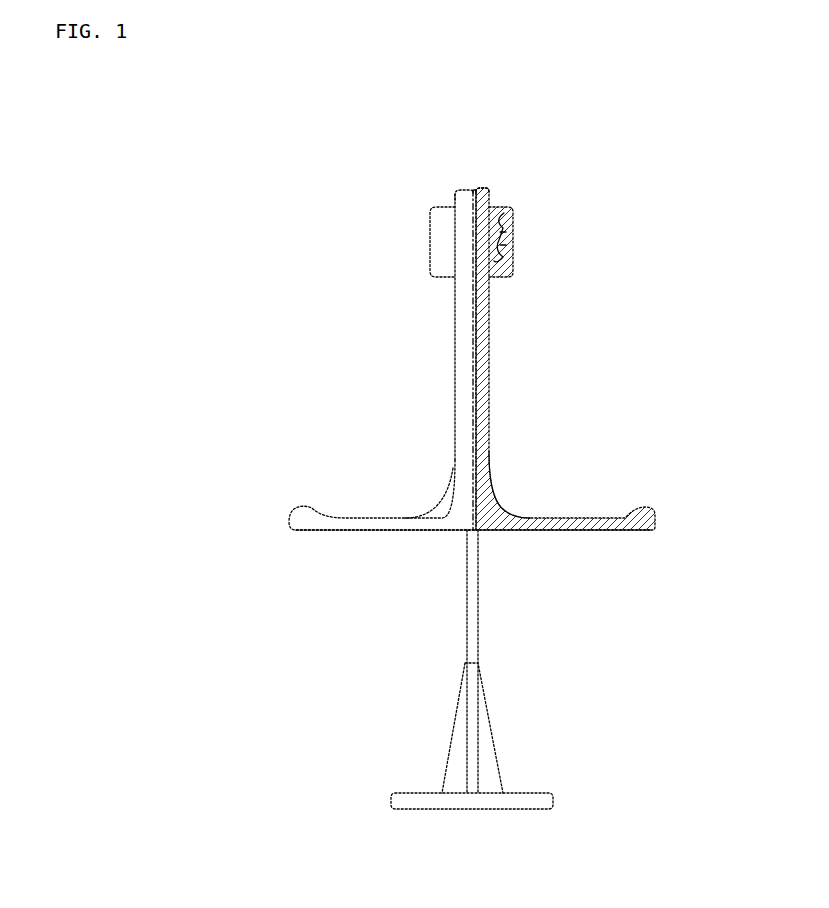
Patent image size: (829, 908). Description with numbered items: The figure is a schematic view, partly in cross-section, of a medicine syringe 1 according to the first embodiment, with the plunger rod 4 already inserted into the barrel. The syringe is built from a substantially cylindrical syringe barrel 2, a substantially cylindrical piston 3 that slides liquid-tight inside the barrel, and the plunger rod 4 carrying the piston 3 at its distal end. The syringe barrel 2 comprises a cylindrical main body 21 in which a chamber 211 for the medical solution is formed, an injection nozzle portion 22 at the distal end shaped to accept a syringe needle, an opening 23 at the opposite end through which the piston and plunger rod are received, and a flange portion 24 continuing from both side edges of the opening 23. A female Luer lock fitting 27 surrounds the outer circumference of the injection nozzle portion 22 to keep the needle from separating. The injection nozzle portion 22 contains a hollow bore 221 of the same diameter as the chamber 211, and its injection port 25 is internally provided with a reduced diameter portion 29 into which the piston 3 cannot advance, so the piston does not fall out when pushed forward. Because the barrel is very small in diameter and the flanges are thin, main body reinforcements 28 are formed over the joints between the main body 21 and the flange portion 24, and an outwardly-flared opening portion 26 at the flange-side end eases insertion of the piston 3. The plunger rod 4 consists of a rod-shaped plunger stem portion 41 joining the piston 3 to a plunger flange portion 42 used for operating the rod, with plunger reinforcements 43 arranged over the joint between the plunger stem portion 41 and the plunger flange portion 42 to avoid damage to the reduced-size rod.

The medicine syringe 1 is at (587, 173).
The syringe barrel 2 is at (500, 300).
The main body 21 is at (455, 348).
The chamber 211 is at (483, 350).
The injection nozzle portion 22 is at (455, 198).
The hollow bore 221 is at (476, 248).
The opening 23 is at (480, 533).
The flange portion 24 is at (343, 532).
The injection port 25 is at (480, 188).
The outwardly-flared opening portion 26 is at (488, 507).
The female Luer lock fitting 27 is at (430, 248).
The main body reinforcements 28 is at (428, 508).
The reduced diameter portion 29 is at (478, 192).
The piston 3 is at (477, 407).
The plunger rod 4 is at (437, 722).
The plunger stem portion 41 is at (478, 605).
The plunger flange portion 42 is at (530, 805).
The plunger reinforcements 43 is at (495, 763).